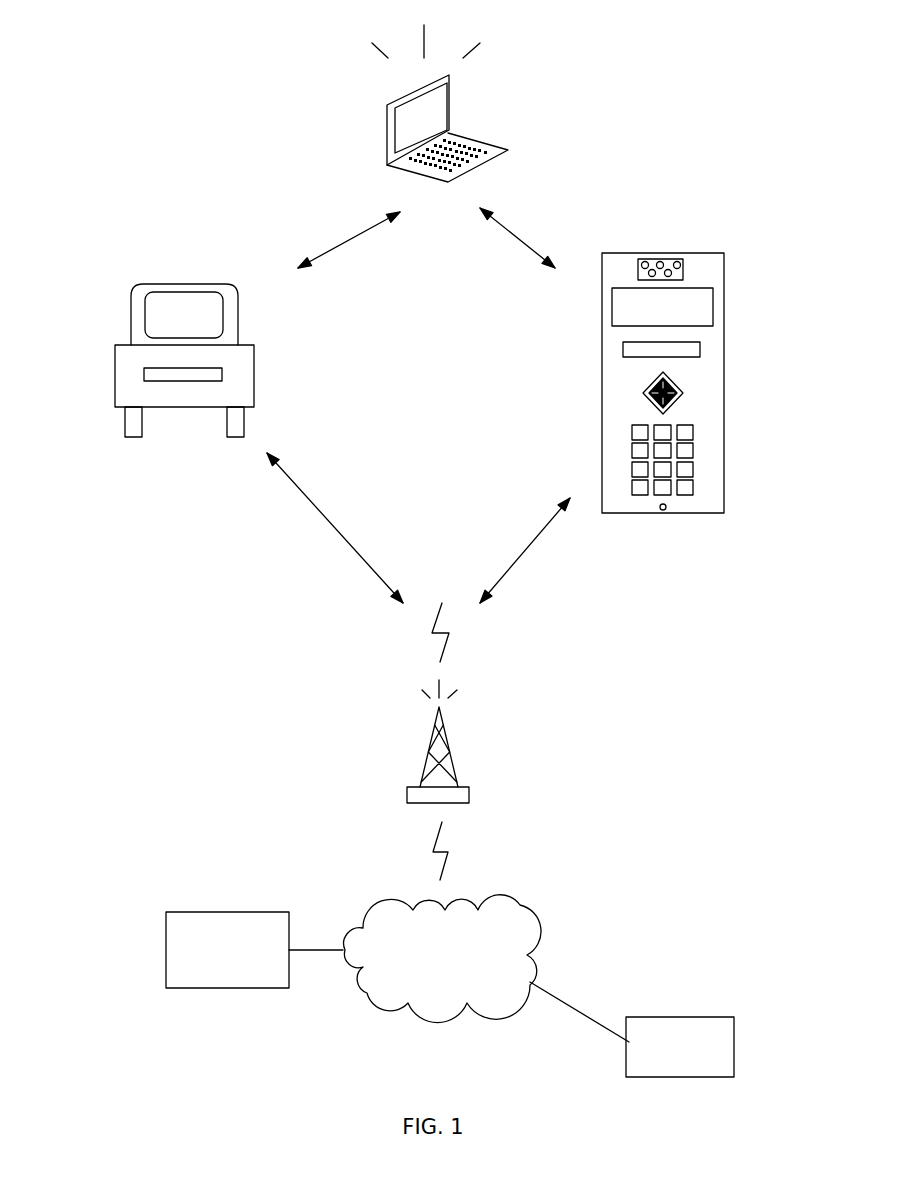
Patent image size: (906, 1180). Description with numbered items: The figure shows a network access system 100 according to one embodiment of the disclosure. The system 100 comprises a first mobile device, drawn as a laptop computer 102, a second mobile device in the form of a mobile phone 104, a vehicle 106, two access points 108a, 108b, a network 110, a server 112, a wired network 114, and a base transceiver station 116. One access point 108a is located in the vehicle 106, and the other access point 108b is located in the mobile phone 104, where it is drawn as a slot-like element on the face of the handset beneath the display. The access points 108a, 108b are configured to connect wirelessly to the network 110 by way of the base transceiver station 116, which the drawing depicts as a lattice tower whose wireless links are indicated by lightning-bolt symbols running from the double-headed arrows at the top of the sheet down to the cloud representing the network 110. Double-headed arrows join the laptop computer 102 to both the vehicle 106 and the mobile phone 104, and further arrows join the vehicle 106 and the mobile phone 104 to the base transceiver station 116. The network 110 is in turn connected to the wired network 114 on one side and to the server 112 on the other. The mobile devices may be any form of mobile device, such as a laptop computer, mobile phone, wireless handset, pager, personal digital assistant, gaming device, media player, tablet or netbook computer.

The network access system 100 is at (83, 85).
The computer 102 is at (387, 133).
The second mobile device 104 is at (703, 383).
The vehicle 106 is at (181, 360).
The access point 108a is at (145, 375).
The access point 108b is at (700, 347).
The network 110 is at (517, 903).
The server 112 is at (693, 1017).
The wired network 114 is at (166, 965).
The base transceiver station 116 is at (469, 794).